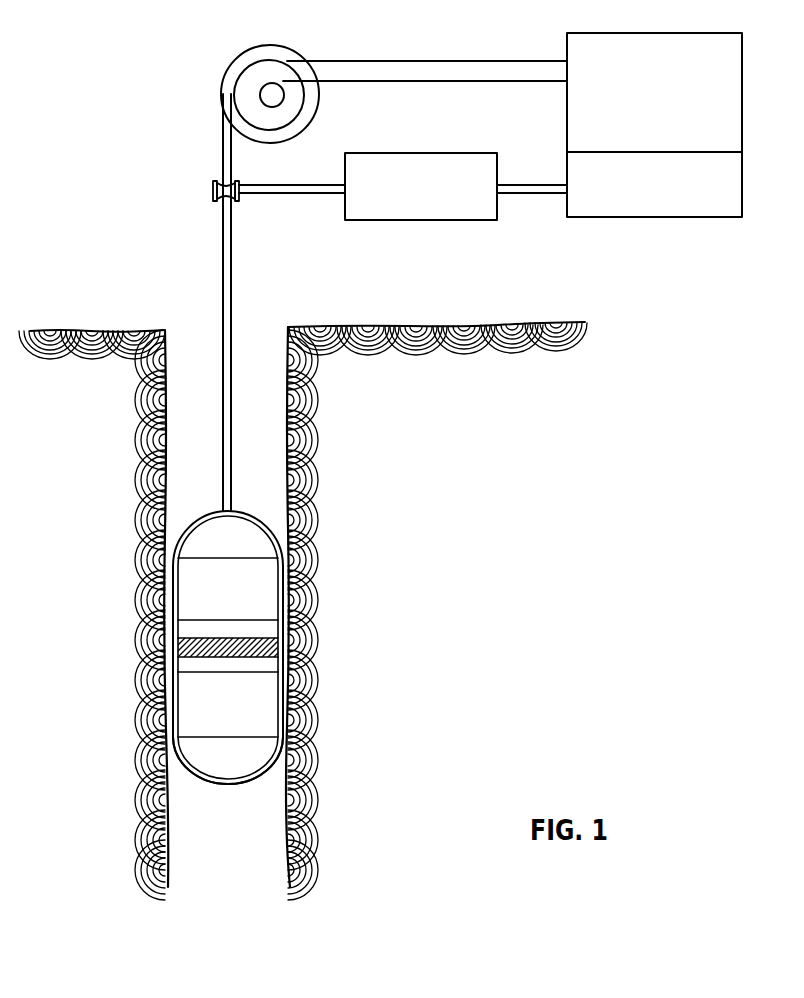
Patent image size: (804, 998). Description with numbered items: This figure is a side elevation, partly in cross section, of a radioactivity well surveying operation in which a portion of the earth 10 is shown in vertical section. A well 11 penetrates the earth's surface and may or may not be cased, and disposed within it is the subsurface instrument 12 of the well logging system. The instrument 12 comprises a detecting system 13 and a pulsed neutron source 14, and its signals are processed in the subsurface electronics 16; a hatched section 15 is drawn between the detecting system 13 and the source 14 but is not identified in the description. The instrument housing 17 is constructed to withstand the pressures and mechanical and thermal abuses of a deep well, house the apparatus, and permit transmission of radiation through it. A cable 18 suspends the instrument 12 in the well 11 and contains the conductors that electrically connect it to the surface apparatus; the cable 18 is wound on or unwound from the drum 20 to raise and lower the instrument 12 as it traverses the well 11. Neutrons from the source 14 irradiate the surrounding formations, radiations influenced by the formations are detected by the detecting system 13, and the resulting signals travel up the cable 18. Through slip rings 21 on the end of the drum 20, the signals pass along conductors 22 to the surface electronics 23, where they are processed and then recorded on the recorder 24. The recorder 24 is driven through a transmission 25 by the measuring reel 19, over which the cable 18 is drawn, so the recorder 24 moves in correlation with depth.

The earth 10 is at (128, 330).
The well 11 is at (200, 355).
The subsurface instrument 12 is at (232, 510).
The detecting system 13 is at (252, 594).
The pulsed neutron source 14 is at (258, 717).
The shield 15 is at (277, 653).
The subsurface electronics 16 is at (255, 542).
The instrument housing 17 is at (267, 767).
The cable 18 is at (233, 322).
The measuring reel 19 is at (266, 183).
The drum 20 is at (222, 92).
The slip rings 21 is at (284, 96).
The conductors 22 is at (358, 80).
The surface electronics 23 is at (702, 33).
The recorder 24 is at (697, 218).
The transmission 25 is at (458, 153).